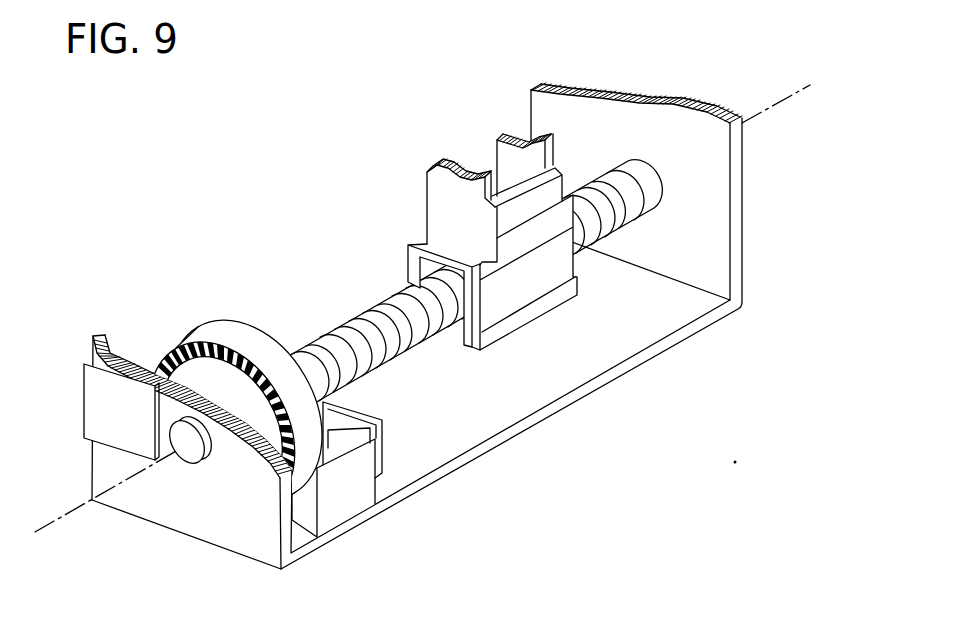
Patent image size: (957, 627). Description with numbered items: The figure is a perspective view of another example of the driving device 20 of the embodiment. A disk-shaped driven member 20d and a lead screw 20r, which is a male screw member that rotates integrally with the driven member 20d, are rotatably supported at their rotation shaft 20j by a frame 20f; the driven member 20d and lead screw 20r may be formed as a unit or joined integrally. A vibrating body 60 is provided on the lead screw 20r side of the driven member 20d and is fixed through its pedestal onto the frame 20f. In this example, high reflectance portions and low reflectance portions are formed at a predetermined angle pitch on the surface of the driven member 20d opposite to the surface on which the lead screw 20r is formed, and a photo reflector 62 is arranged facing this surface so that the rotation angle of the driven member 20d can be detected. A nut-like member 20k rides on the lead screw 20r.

The driving device 20 is at (298, 213).
The driven member 20d is at (226, 332).
The frame 20f is at (478, 423).
The rotation shaft 20j is at (192, 448).
The nut carriage 20k is at (497, 118).
The lead screw 20r is at (350, 333).
The vibrating body 60 is at (350, 494).
The photo reflector 62 is at (100, 408).